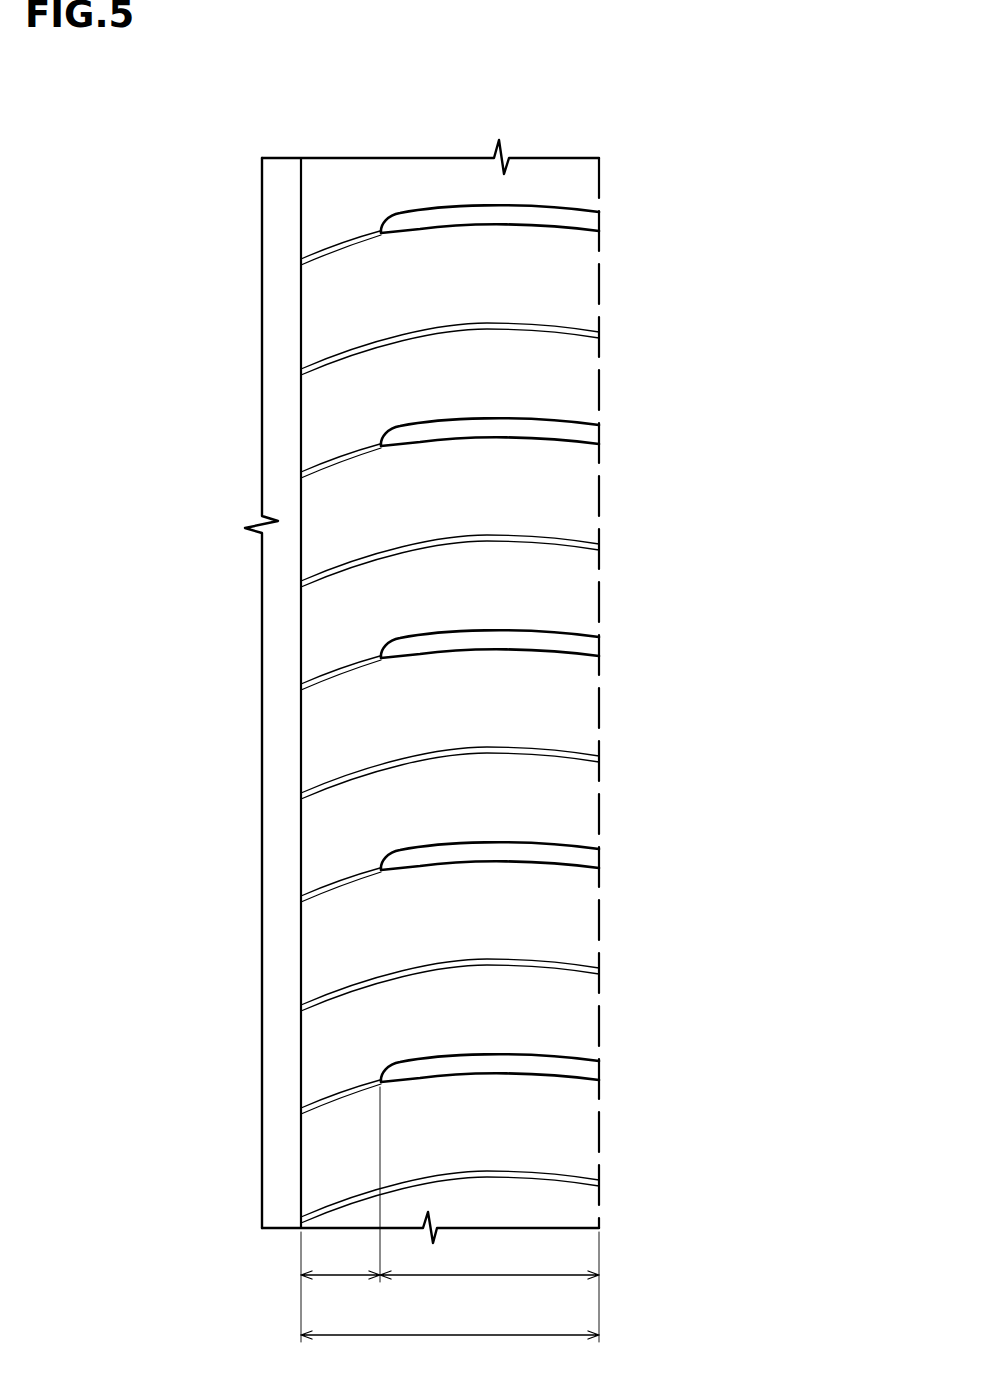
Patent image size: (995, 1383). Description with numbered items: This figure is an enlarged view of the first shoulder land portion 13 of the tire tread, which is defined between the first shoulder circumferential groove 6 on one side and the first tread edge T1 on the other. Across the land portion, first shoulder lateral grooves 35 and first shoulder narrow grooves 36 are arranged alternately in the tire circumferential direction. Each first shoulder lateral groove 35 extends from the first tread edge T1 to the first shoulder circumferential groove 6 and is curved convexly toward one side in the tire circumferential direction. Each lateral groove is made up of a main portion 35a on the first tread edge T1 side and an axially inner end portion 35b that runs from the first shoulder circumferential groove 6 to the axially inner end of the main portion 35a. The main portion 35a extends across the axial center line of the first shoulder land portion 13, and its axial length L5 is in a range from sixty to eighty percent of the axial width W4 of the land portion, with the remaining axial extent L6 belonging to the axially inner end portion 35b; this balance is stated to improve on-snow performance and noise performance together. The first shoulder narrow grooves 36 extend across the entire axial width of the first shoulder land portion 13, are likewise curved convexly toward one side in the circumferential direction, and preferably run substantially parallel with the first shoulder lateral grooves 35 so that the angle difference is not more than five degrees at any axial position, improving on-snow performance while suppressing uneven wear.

The first shoulder circumferential groove 6 is at (284, 181).
The first shoulder land portion 13 is at (442, 182).
The first tread edge T1 is at (599, 186).
The first shoulder lateral groove 35 is at (404, 659).
The main portion 35a is at (452, 629).
The axially inner end portion 35b is at (337, 670).
The first shoulder narrow groove 36 is at (502, 325).
The axial length of the main portion L5 is at (489, 1287).
The length of narrow groove portion L6 is at (340, 1214).
The axial width of the first shoulder land portion W4 is at (450, 1351).